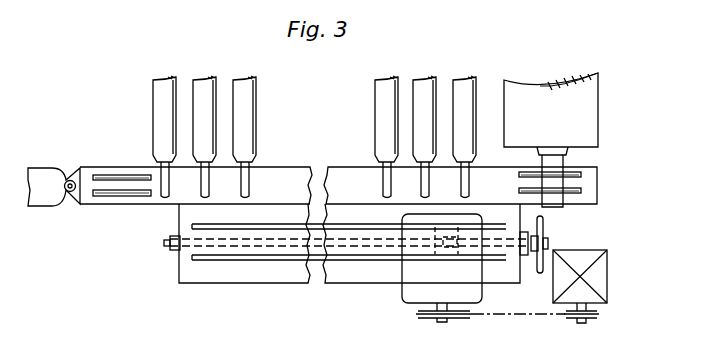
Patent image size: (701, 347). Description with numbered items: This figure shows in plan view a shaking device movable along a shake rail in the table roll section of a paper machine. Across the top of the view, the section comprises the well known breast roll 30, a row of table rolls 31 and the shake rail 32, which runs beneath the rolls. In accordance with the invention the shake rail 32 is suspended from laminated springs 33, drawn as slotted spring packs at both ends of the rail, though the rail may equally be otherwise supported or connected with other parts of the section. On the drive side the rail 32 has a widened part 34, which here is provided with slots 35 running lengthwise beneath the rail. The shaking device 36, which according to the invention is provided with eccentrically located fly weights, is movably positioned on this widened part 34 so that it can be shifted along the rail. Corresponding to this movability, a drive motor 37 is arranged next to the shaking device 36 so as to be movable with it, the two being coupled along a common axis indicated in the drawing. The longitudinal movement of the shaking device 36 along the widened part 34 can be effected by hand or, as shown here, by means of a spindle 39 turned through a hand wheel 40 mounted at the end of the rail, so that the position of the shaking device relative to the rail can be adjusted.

The breast roll 30 is at (586, 108).
The table rolls 31 is at (381, 103).
The shake rail 32 is at (358, 178).
The laminated springs 33 is at (122, 194).
The widened part 34 is at (230, 275).
The slots 35 is at (363, 257).
The shaking device 36 is at (412, 291).
The drive motor 37 is at (600, 269).
The spindle 39 is at (549, 244).
The hand wheel 40 is at (540, 265).